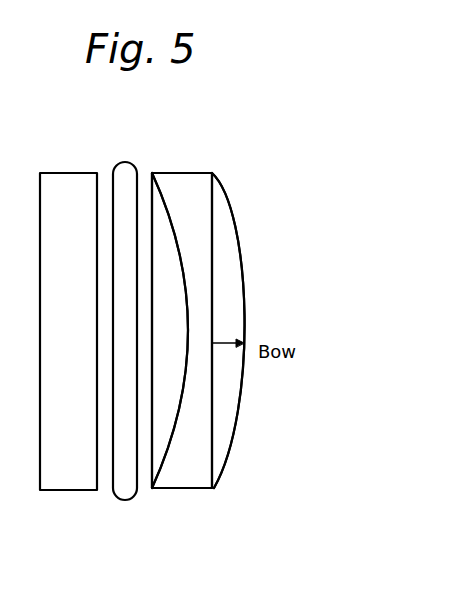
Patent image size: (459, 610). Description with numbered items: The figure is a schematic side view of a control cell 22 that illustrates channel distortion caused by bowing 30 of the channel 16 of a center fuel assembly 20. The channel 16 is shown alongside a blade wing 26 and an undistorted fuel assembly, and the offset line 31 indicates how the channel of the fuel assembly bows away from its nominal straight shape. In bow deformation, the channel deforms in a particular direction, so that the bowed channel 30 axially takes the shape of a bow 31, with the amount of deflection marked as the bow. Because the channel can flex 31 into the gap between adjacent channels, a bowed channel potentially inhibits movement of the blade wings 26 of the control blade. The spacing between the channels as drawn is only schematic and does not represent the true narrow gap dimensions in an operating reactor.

The fuel assembly 20 is at (68, 187).
The blade wing 26 is at (127, 178).
The channel 16 is at (238, 232).
The control cell 22 is at (308, 285).
The bowing 30 is at (200, 408).
The offset line 31 is at (238, 435).